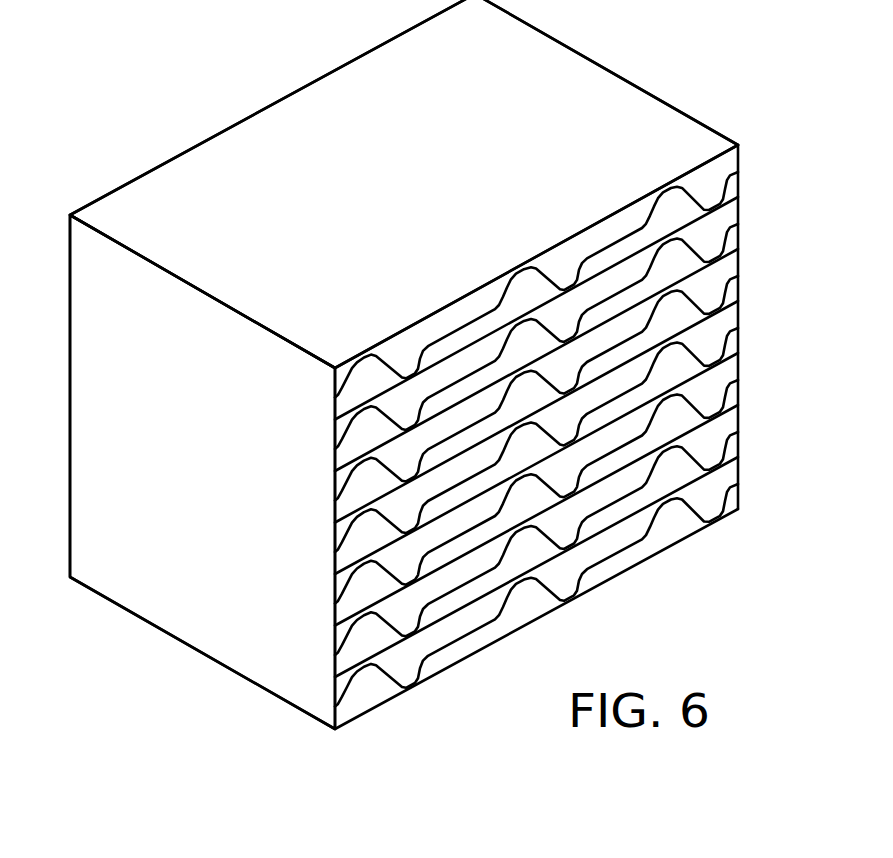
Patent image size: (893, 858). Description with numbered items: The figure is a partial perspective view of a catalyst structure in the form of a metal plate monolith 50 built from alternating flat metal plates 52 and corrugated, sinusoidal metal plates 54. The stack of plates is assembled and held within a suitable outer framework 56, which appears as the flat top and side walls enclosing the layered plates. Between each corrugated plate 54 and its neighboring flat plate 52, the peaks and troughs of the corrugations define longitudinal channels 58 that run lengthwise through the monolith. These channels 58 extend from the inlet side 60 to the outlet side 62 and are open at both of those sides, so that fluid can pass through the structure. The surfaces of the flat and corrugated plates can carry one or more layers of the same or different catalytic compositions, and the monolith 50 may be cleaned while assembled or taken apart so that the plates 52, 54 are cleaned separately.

The metal plate monolith 50 is at (656, 79).
The flat metal plate 52 is at (740, 239).
The corrugated metal plate 54 is at (737, 213).
The outer framework 56 is at (598, 75).
The longitudinal channel 58 is at (715, 378).
The inlet side 60 is at (382, 688).
The outlet side 62 is at (70, 228).